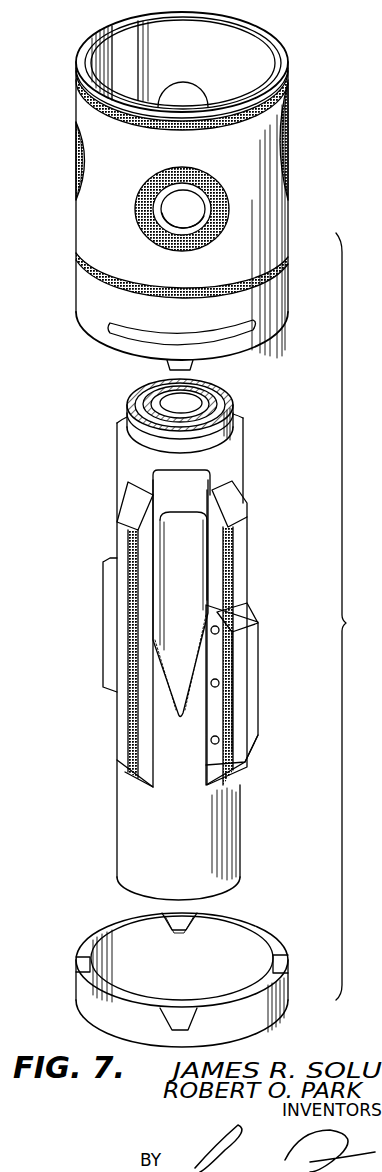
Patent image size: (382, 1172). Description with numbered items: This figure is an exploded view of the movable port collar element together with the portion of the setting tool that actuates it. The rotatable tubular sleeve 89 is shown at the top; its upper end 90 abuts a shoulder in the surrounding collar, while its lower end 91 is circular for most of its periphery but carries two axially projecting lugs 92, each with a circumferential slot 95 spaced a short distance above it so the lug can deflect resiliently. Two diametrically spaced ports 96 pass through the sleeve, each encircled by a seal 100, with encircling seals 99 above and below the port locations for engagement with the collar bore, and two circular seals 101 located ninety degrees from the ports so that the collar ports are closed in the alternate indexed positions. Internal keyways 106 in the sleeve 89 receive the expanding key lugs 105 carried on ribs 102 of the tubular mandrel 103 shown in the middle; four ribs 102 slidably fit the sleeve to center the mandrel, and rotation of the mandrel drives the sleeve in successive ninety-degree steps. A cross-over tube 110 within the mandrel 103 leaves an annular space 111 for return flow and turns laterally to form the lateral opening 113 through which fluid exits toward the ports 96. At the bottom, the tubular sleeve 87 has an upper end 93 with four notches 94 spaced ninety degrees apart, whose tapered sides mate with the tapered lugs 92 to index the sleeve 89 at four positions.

The tubular sleeve 87 is at (85, 1012).
The tubular sleeve 89 is at (283, 207).
The upper end of sleeve 90 is at (272, 48).
The lower end of sleeve 91 is at (122, 358).
The lug 92 is at (200, 368).
The upper end of sleeve 93 is at (100, 935).
The notch 94 is at (200, 915).
The circumferential slot 95 is at (250, 325).
The port 96 is at (185, 92).
The encircling seal 99 is at (290, 103).
The seal 100 is at (153, 226).
The circular seal 101 is at (78, 126).
The rib 102 is at (125, 550).
The tubular mandrel 103 is at (130, 832).
The expanding key lug 105 is at (112, 590).
The internal keyway 106 is at (122, 52).
The tube 110 is at (205, 403).
The annular space 111 is at (142, 404).
The lateral opening 113 is at (192, 568).